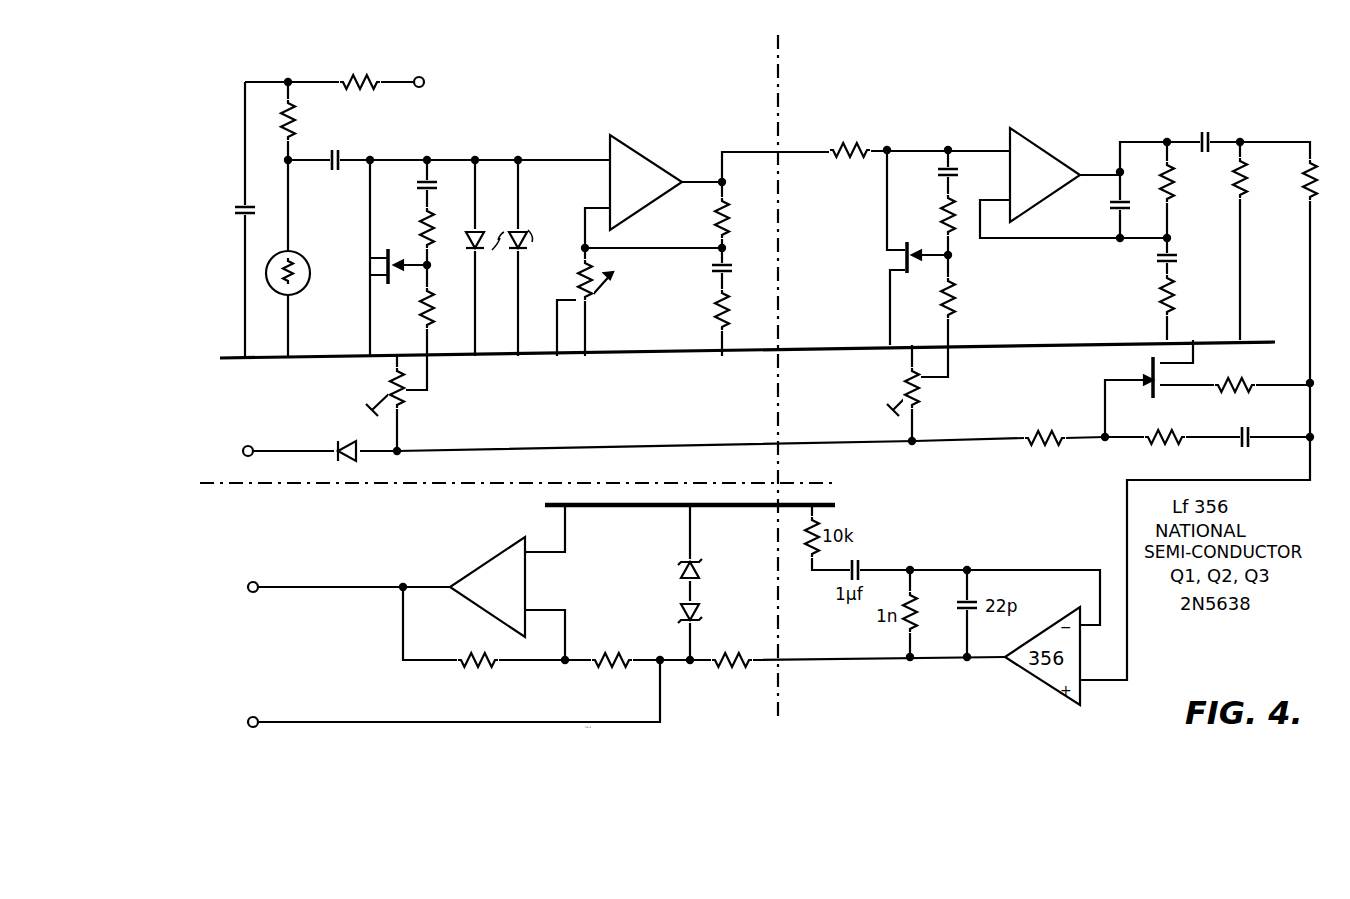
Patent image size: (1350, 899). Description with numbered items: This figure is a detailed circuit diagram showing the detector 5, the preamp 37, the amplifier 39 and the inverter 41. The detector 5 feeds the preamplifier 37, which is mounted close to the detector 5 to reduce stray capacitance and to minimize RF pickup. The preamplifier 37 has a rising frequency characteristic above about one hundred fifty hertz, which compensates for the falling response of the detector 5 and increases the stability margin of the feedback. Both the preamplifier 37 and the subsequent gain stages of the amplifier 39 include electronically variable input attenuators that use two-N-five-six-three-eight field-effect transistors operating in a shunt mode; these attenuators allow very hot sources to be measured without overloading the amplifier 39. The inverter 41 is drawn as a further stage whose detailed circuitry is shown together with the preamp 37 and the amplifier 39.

The preamplifier 37 is at (729, 248).
The amplifier 39 is at (1088, 354).
The inverter 41 is at (531, 616).
The detector 5 is at (306, 265).